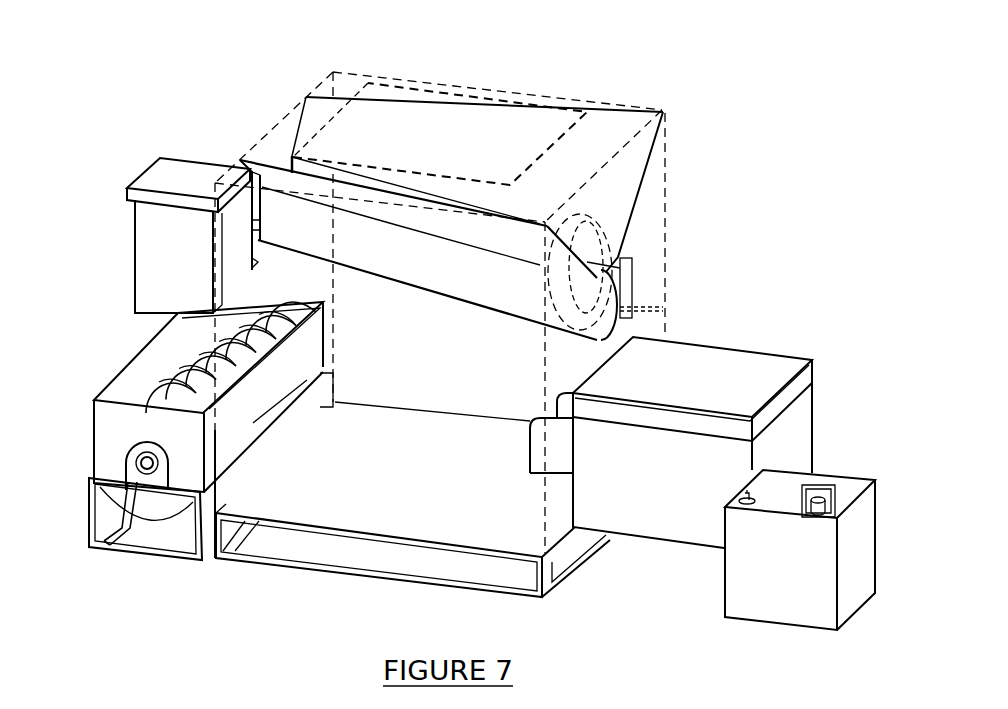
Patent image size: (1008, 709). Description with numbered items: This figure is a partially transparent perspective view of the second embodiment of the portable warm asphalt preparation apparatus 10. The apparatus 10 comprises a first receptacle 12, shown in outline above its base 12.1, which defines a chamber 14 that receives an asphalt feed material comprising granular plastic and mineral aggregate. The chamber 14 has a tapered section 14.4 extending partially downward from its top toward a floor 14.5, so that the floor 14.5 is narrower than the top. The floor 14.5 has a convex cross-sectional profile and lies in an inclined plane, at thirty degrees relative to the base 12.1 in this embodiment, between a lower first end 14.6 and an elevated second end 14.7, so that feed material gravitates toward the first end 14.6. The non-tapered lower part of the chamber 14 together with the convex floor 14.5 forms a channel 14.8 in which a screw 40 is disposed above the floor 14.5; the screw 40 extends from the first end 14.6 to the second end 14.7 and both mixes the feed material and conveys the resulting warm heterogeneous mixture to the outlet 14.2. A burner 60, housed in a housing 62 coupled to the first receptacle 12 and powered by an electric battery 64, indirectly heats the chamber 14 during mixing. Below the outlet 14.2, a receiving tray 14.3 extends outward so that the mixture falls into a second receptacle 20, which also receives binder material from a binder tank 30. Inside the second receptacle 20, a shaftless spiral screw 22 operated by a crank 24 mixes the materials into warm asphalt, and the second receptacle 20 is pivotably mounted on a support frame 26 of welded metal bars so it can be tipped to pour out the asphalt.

The portable warm asphalt preparation apparatus 10 is at (777, 93).
The first receptacle 12 is at (333, 72).
The base 12.1 is at (367, 507).
The chamber 14 is at (607, 140).
The outlet 14.2 is at (243, 197).
The receiving tray 14.3 is at (305, 262).
The tapered section 14.4 is at (640, 190).
The floor 14.5 is at (458, 283).
The first end 14.6 is at (578, 322).
The second end 14.7 is at (280, 220).
The channel 14.8 is at (440, 268).
The screw 40 is at (613, 278).
The binder tank 30 is at (153, 267).
The second receptacle 20 is at (107, 428).
The shaftless spiral screw 22 is at (272, 322).
The support frame 26 is at (93, 508).
The crank 24 is at (128, 515).
The burner 60 is at (531, 453).
The housing 62 is at (798, 435).
The electric battery 64 is at (748, 568).